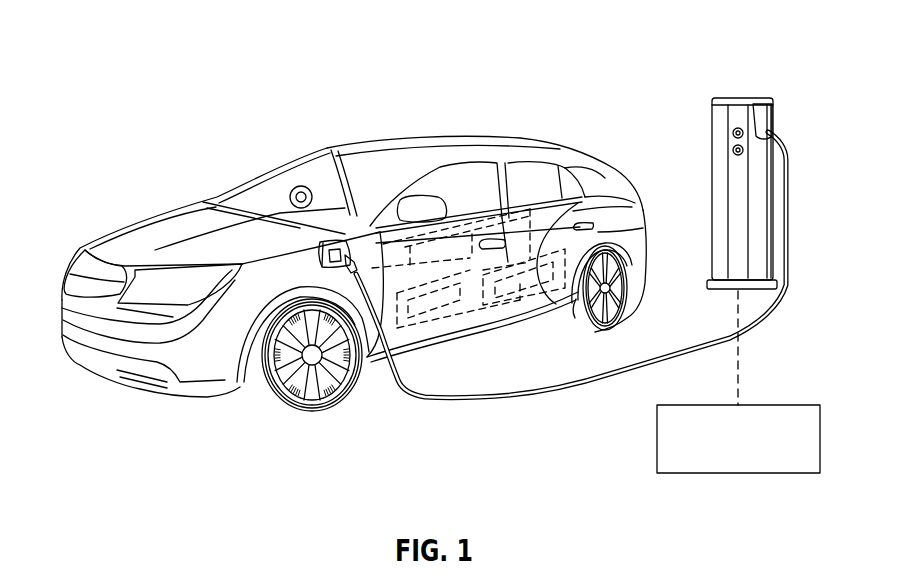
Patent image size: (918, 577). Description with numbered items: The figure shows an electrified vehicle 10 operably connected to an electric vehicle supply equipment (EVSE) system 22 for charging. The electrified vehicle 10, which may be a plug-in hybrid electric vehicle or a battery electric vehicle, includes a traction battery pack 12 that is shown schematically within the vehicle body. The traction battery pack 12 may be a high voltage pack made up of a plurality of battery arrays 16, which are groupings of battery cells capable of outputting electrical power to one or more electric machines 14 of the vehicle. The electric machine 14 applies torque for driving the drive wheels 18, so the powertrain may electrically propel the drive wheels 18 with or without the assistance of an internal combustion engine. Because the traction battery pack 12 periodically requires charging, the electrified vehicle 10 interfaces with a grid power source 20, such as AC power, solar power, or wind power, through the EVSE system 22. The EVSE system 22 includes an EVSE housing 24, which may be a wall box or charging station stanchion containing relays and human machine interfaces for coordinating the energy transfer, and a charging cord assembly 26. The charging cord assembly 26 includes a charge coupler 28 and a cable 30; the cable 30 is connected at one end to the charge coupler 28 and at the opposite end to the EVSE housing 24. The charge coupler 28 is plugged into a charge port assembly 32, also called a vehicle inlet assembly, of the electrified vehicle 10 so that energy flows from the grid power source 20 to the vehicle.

The electrified vehicle 10 is at (123, 73).
The traction battery pack 12 is at (570, 197).
The electric machine 14 is at (452, 229).
The battery arrays 16 is at (420, 317).
The drive wheels 18 is at (317, 417).
The grid power source 20 is at (820, 443).
The electric vehicle supply equipment (EVSE) system 22 is at (722, 80).
The EVSE housing 24 is at (758, 110).
The charging cord assembly 26 is at (598, 397).
The charge coupler 28 is at (340, 250).
The cable 30 is at (407, 393).
The charge port assembly 32 is at (320, 261).